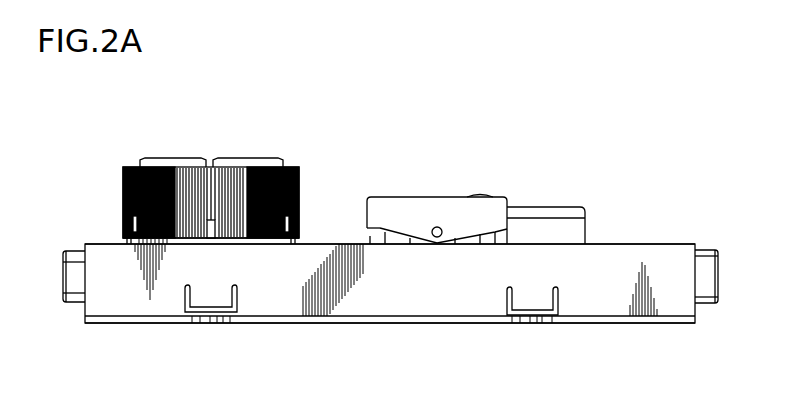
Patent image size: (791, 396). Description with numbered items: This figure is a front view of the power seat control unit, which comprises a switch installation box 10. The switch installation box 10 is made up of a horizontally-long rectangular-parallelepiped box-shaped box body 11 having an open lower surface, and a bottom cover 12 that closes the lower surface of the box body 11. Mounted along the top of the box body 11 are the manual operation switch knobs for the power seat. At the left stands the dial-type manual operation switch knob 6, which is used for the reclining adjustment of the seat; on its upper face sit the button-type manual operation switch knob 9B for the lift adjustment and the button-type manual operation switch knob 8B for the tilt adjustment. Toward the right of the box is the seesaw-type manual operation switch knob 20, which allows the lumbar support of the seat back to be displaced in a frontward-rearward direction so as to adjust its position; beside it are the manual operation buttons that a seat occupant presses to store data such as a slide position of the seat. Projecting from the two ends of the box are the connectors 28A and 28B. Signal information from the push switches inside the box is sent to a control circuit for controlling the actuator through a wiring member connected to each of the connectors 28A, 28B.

The switch installation box 10 is at (390, 280).
The box body 11 is at (608, 244).
The bottom cover 12 is at (612, 324).
The dial-type manual operation switch knob 6 is at (229, 175).
The button-type manual operation switch knob 8B is at (248, 162).
The button-type manual operation switch knob 9B is at (171, 162).
The seesaw-type manual operation switch knob 20 is at (431, 202).
The connector 28A is at (75, 294).
The connector 28B is at (708, 301).